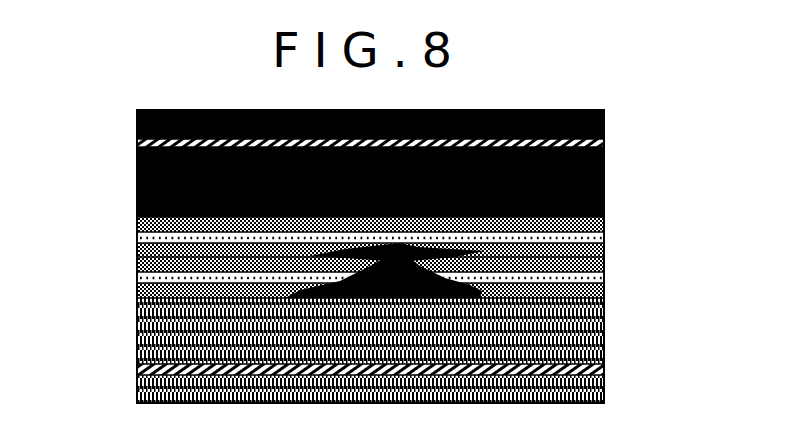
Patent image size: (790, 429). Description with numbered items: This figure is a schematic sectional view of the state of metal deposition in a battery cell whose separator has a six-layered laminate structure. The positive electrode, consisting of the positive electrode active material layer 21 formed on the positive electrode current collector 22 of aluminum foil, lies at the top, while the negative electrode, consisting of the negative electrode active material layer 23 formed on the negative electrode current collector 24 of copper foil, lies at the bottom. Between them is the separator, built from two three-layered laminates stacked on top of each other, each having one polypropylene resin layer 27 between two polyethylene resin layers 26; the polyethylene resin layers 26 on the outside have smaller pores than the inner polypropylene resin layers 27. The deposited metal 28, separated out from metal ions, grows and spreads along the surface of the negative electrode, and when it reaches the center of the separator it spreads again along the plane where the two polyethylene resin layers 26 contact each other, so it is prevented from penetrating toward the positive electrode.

The active material layer for positive electrode 21 is at (604, 118).
The current collector for positive electrode 22 is at (137, 143).
The active material layer for negative electrode 23 is at (604, 333).
The current collector for negative electrode 24 is at (137, 370).
The polyethylene resin layer 26 is at (604, 228).
The polypropylene resin layer 27 is at (137, 237).
The deposited metal 28 is at (604, 292).